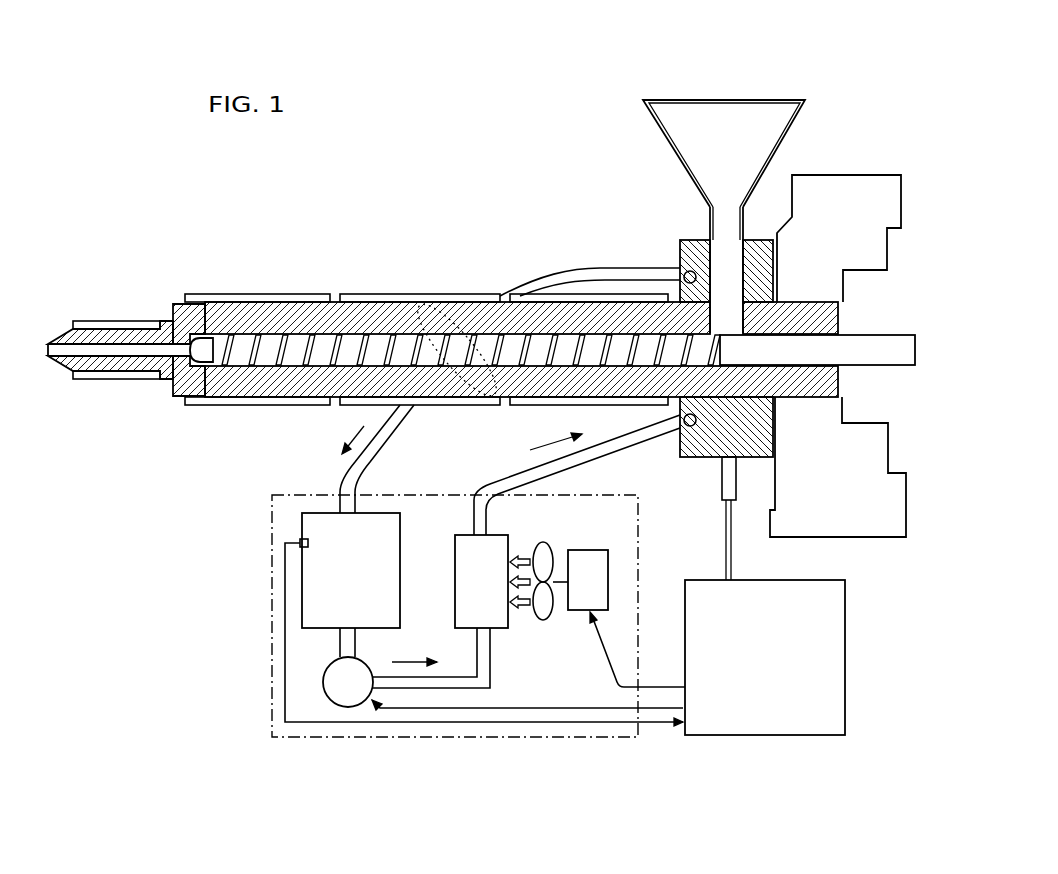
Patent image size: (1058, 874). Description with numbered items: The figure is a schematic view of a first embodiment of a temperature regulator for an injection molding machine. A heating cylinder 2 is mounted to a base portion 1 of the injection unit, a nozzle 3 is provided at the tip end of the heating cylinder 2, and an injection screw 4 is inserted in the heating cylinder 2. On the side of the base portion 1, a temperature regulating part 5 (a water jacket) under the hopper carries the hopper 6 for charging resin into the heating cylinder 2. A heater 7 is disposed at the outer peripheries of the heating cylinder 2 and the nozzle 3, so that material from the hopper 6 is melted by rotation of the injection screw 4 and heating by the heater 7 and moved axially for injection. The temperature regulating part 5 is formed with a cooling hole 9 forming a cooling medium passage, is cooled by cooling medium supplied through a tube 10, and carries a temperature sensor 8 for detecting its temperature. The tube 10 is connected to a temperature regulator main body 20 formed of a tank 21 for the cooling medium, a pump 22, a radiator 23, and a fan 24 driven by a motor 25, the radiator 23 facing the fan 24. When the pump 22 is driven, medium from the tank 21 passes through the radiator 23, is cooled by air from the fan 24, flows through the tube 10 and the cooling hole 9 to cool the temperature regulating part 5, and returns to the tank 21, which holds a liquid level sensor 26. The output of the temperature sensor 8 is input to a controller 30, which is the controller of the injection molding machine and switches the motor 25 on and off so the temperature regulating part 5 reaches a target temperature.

The base portion 1 is at (823, 185).
The heating cylinder 2 is at (300, 320).
The nozzle 3 is at (120, 379).
The injection screw 4 is at (265, 360).
The temperature regulating part under the hopper 5 is at (680, 253).
The hopper 6 is at (692, 106).
The heater 7 is at (132, 321).
The temperature sensor 8 is at (742, 487).
The cooling hole 9 is at (680, 254).
The tube 10 is at (562, 270).
The temperature regulator main body 20 is at (276, 690).
The tank 21 is at (300, 590).
The pump 22 is at (338, 702).
The radiator 23 is at (505, 630).
The fan 24 is at (545, 622).
The motor 25 is at (608, 562).
The liquid level sensor 26 is at (300, 541).
The controller 30 is at (775, 736).